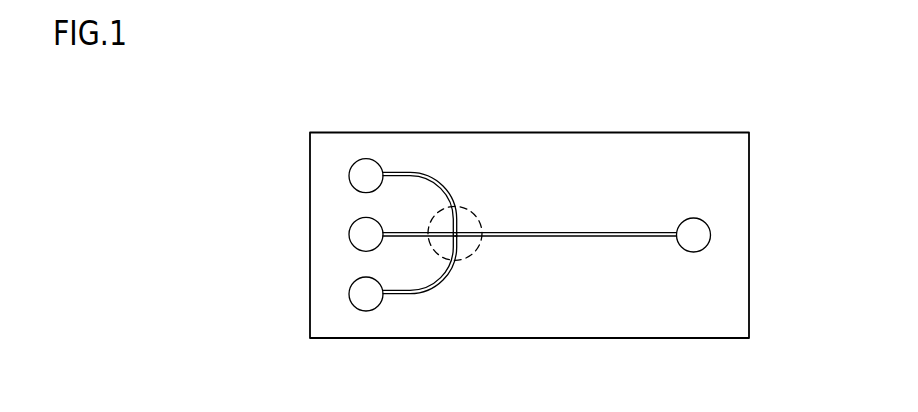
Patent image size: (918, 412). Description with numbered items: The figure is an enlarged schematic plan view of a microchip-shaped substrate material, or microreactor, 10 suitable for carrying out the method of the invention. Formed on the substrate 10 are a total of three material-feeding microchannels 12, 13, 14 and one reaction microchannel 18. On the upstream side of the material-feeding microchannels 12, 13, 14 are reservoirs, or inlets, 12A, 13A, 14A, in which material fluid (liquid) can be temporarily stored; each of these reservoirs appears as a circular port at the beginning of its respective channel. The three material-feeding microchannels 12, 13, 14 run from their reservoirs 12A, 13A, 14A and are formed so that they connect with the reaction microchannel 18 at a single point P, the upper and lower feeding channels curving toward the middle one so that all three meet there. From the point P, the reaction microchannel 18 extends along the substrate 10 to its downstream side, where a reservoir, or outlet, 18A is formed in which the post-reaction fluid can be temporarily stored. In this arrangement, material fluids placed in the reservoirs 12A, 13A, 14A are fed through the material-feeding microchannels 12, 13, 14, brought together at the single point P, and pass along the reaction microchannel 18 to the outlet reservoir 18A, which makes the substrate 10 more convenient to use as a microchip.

The substrate 10 is at (683, 131).
The material-feeding microchannel 12 is at (406, 172).
The reservoir (inlet) 12A is at (353, 163).
The material-feeding microchannel 13 is at (408, 232).
The reservoir (inlet) 13A is at (353, 222).
The material-feeding microchannel 14 is at (416, 295).
The reservoir (inlet) 14A is at (353, 282).
The reaction microchannel 18 is at (572, 233).
The reservoir (outlet) 18A is at (706, 218).
The single point P is at (467, 250).